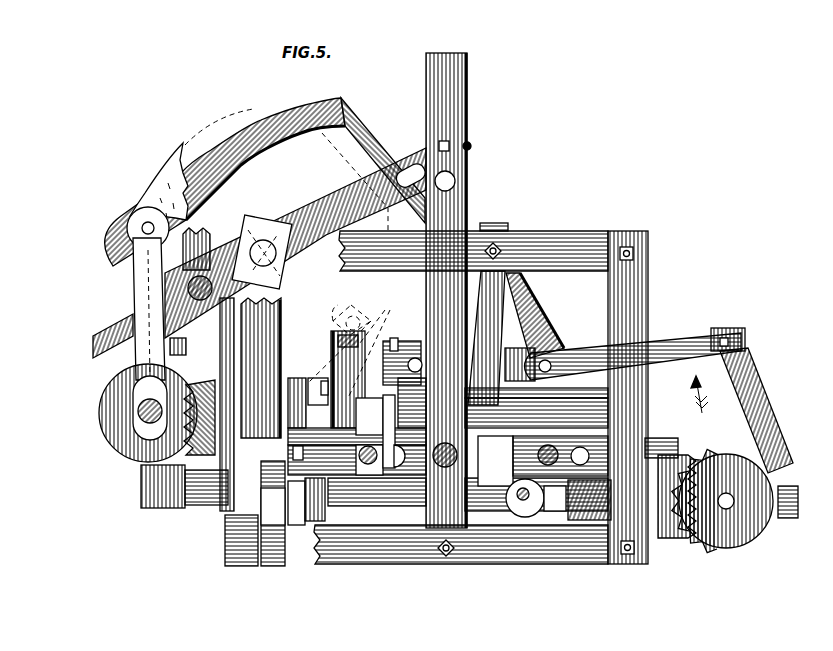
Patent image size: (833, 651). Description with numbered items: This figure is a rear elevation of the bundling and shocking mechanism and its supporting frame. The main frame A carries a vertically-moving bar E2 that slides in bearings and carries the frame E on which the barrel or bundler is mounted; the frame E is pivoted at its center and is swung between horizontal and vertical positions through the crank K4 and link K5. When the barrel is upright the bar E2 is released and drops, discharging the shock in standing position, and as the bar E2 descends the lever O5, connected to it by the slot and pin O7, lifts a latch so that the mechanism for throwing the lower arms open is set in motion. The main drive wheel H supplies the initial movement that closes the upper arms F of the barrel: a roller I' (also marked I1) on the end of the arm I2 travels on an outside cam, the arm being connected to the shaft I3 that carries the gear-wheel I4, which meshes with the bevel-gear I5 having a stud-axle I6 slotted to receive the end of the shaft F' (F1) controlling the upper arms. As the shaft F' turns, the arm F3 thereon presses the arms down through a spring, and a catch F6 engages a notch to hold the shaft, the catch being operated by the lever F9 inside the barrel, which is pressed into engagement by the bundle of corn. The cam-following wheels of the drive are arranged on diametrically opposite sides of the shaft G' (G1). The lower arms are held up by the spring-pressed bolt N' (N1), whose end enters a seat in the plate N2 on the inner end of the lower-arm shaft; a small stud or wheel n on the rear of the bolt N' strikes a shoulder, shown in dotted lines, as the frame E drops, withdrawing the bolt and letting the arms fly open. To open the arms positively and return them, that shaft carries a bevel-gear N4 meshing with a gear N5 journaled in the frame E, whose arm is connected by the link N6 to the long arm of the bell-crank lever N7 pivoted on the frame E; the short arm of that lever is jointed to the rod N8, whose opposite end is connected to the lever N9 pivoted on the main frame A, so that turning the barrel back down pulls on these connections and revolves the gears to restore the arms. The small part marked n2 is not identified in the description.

The vertically-moving bar E2 is at (460, 92).
The slot and pin O7 is at (463, 138).
The rod N8 is at (366, 128).
The lever N9 is at (246, 182).
The main drive wheel H is at (164, 143).
The roller I' is at (135, 218).
The roller I1 is at (126, 211).
The shaft G' is at (262, 241).
The shaft G1 is at (257, 232).
The lever O5 is at (260, 253).
The main frame A is at (536, 225).
The arm I2 is at (128, 293).
The crank K4 is at (349, 341).
The link K5 is at (384, 317).
The lever F9 is at (388, 334).
The arm F3 is at (326, 353).
The bevel-gear I5 is at (199, 404).
The stud-axle I6 is at (261, 368).
The arms F is at (287, 398).
The brace n2 is at (486, 338).
The bell-crank lever N7 is at (546, 331).
The gear-wheel I4 is at (98, 400).
The shaft I3 is at (150, 401).
The catch F6 is at (380, 435).
The frame E is at (275, 510).
The spring-pressed bolt N' is at (468, 449).
The spring-pressed bolt N1 is at (468, 449).
The shaft F' is at (448, 411).
The shaft F1 is at (448, 411).
The stud or wheel n is at (536, 498).
The link N6 is at (748, 398).
The gear N5 is at (765, 530).
The bevel-gear N4 is at (660, 531).
The plate N2 is at (265, 556).